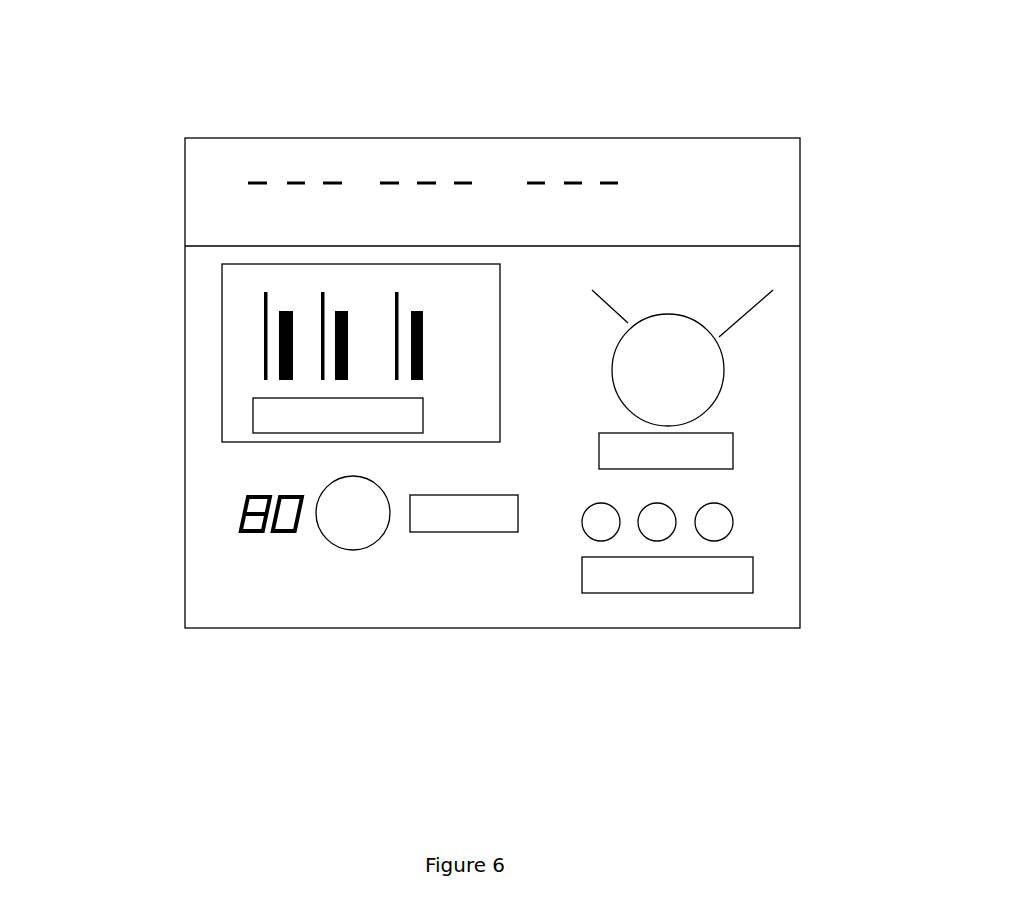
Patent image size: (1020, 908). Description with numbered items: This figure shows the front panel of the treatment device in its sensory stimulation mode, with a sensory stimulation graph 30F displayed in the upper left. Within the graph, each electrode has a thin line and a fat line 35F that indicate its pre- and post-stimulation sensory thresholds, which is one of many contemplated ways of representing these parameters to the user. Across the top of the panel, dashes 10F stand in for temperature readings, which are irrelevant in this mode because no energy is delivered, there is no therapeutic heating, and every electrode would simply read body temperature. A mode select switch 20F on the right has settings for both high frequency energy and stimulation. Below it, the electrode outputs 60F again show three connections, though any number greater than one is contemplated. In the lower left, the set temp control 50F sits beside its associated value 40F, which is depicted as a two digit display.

The dashes 10F is at (305, 166).
The mode select switch 20F is at (733, 362).
The sensory stimulation graph 30F is at (229, 398).
The thin line and fat line 35F is at (265, 345).
The set temp value display 40F is at (228, 505).
The set temp 50F is at (342, 558).
The electrode outputs 60F is at (752, 522).